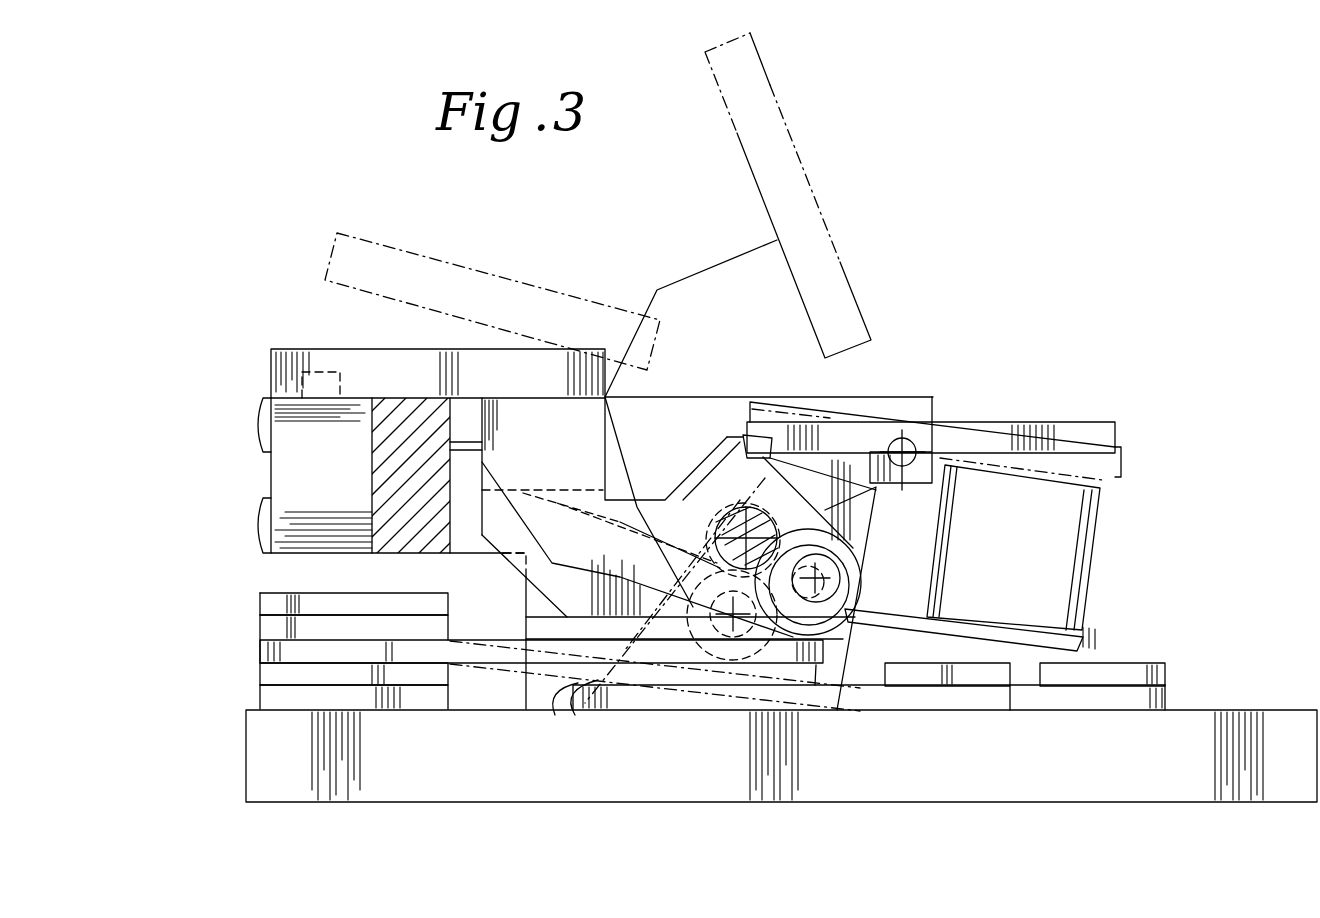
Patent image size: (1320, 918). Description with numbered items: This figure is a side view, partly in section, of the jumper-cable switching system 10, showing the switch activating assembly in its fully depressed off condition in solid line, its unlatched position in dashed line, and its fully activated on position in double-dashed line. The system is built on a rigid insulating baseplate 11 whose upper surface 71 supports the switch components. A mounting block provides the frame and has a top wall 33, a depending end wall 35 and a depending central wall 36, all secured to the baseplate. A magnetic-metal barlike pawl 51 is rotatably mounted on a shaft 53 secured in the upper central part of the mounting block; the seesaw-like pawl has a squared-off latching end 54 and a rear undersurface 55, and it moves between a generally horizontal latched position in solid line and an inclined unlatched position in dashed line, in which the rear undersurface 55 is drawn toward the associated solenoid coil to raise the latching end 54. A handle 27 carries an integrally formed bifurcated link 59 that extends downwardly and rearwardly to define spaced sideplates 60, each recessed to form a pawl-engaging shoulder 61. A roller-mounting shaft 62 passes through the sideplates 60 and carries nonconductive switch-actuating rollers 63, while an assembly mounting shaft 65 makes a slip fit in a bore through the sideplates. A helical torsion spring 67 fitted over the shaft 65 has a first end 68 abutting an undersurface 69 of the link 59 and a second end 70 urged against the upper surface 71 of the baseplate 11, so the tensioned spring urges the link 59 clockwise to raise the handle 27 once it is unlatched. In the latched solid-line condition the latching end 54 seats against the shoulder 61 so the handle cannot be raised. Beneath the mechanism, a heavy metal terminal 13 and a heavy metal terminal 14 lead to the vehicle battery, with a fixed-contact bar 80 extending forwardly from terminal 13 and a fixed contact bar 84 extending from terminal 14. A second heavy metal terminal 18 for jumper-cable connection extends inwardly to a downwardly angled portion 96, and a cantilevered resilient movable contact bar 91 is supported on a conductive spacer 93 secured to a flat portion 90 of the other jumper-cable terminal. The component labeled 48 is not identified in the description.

The jumper-cable switching system 10 is at (985, 262).
The rigid insulating baseplate 11 is at (1262, 712).
The heavy metal terminal 13 is at (1003, 675).
The heavy metal terminal 14 is at (1160, 677).
The heavy metal terminal 18 is at (265, 605).
The handle 27 is at (377, 349).
The top wall 33 is at (887, 397).
The depending end wall 35 is at (457, 420).
The depending central wall 36 is at (940, 500).
The carriage block 48 is at (1095, 515).
The magnetic-metal barlike pawl 51 is at (1092, 420).
The shaft 53 is at (907, 440).
The latching end 54 is at (745, 428).
The pawl rear undersurface 55 is at (1120, 466).
The bifurcated link 59 is at (472, 402).
The sideplates 60 is at (548, 583).
The pawl-engaging shoulder 61 is at (743, 445).
The roller-mounting shaft 62 is at (845, 562).
The switch-actuating rollers 63 is at (822, 515).
The assembly mounting shaft 65 is at (715, 527).
The helical torsion spring 67 is at (757, 500).
The first end of spring 68 is at (600, 545).
The undersurface of link 69 is at (550, 490).
The second end of spring 70 is at (613, 733).
The upper surface of baseplate 71 is at (480, 700).
The fixed-contact bar 80 is at (965, 710).
The fixed contact bar 84 is at (1162, 695).
The flat portion 90 is at (265, 697).
The movable contact bar 91 is at (265, 651).
The conductive spacers 93 is at (265, 672).
The downwardly angled portion 96 is at (265, 627).